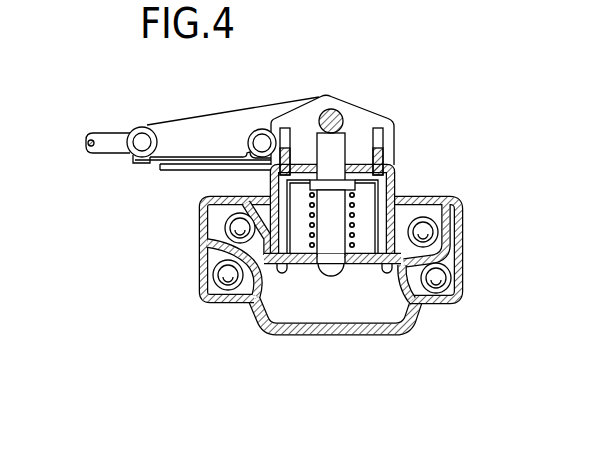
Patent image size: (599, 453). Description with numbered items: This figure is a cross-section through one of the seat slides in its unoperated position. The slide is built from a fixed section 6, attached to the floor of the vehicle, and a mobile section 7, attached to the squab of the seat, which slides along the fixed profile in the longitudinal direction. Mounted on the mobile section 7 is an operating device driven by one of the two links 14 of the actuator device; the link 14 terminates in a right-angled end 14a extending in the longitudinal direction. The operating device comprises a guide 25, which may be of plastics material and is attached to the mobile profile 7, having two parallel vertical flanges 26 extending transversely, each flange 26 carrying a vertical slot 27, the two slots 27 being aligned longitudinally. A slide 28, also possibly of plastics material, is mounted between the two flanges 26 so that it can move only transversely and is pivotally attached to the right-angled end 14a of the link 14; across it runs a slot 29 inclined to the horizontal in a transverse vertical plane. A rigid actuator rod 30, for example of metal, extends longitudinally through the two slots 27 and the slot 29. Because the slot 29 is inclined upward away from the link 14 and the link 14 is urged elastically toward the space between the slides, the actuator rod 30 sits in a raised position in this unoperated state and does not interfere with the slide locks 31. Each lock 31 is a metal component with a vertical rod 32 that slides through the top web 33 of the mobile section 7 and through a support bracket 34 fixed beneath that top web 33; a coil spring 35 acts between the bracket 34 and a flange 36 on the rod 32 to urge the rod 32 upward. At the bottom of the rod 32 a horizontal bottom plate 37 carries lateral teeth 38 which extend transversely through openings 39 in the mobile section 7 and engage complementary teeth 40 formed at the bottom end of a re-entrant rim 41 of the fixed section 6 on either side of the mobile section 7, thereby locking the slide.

The fixed section 6 is at (290, 335).
The mobile section 7 is at (458, 212).
The link 14 is at (118, 131).
The right-angled end 14a is at (142, 140).
The guide 25 is at (268, 176).
The vertical flange 26 is at (389, 140).
The vertical slot 27 is at (347, 134).
The slide 28 is at (212, 137).
The slot 29 is at (259, 141).
The actuator rod 30 is at (328, 112).
The slide lock 31 is at (343, 283).
The vertical rod 32 is at (340, 150).
The top web 33 is at (298, 197).
The support bracket 34 is at (312, 268).
The coil spring 35 is at (262, 246).
The flange 36 is at (396, 167).
The bottom plate 37 is at (362, 266).
The lateral tooth 38 is at (255, 303).
The opening 39 is at (414, 303).
The complementary tooth 40 is at (466, 250).
The re-entrant rim 41 is at (407, 194).